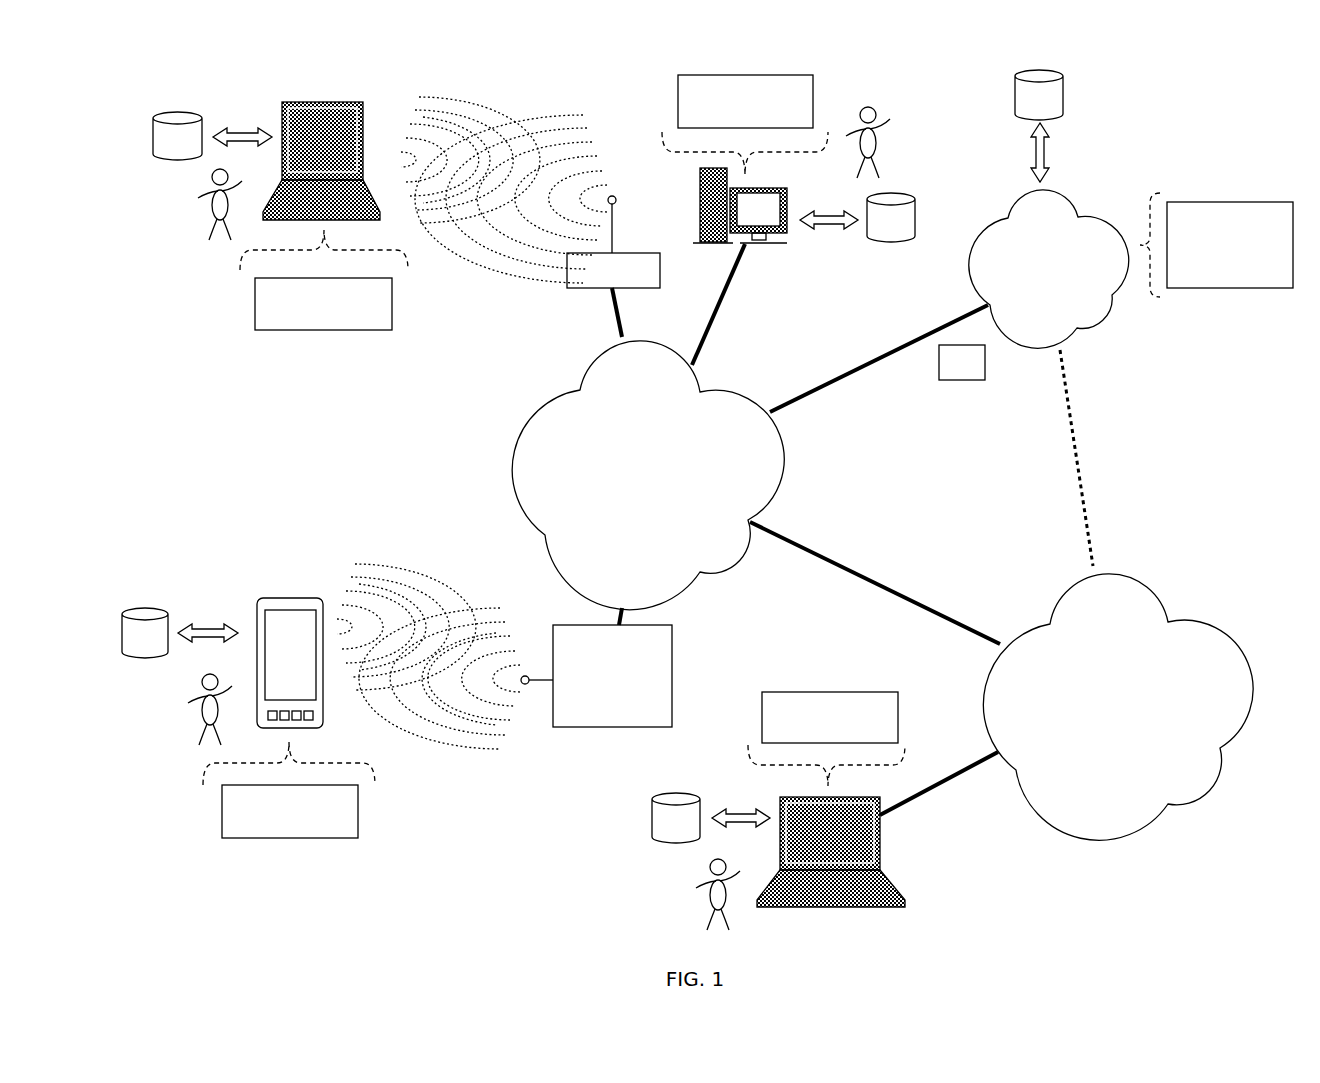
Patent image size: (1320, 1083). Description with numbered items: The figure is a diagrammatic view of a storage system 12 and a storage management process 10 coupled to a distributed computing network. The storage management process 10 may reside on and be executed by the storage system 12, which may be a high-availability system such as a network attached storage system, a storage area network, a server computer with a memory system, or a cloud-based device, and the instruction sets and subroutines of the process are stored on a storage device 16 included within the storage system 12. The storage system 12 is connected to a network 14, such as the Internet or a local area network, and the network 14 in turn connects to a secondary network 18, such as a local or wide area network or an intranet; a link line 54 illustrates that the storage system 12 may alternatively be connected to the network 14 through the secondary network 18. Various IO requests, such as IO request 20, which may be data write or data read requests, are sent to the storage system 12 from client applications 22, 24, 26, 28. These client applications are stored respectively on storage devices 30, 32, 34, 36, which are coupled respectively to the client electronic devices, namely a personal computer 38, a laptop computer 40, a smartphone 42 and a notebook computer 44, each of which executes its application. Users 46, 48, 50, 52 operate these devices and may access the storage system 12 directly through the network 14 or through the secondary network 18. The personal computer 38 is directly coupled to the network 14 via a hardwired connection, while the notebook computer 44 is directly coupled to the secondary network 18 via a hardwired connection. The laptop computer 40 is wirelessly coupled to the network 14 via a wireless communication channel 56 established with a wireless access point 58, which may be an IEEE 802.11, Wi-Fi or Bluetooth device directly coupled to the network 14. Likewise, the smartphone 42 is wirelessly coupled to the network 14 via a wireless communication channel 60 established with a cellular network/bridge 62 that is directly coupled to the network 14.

The storage management process 10 is at (1293, 242).
The storage system 12 is at (1049, 269).
The network 14 is at (648, 475).
The storage device 16 is at (1039, 95).
The secondary network 18 is at (1118, 707).
The IO request 20 is at (985, 360).
The client application 22 is at (813, 105).
The client application 24 is at (392, 297).
The client application 26 is at (358, 803).
The client application 28 is at (898, 720).
The storage device 30 is at (891, 217).
The storage device 32 is at (177, 136).
The storage device 34 is at (145, 633).
The storage device 36 is at (676, 818).
The personal computer 38 is at (787, 205).
The laptop computer 40 is at (363, 127).
The smartphone 42 is at (323, 663).
The notebook computer 44 is at (880, 843).
The user 46 is at (885, 122).
The user 48 is at (183, 195).
The user 50 is at (185, 692).
The user 52 is at (685, 884).
The link line 54 is at (1074, 446).
The wireless communication channel 56 is at (508, 145).
The wireless access point 58 is at (567, 272).
The wireless communication channel 60 is at (437, 625).
The cellular network/bridge 62 is at (672, 642).